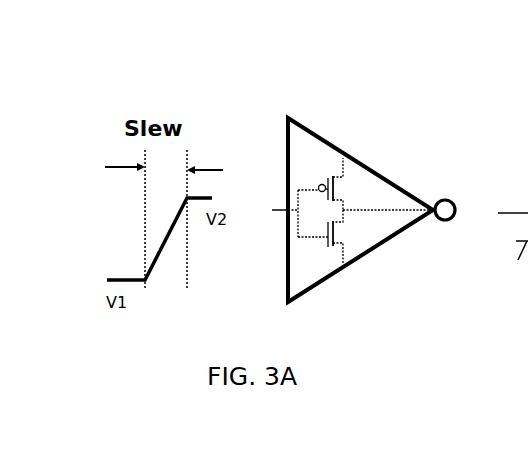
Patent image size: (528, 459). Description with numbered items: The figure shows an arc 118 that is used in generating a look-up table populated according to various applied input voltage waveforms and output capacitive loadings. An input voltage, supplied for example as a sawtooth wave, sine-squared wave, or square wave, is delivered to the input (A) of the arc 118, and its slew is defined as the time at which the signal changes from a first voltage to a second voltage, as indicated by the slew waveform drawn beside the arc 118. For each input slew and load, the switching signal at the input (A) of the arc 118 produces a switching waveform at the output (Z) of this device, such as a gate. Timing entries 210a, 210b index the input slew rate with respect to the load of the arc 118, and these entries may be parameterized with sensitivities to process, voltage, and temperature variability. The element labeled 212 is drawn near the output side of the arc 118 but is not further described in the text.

The arc 118 is at (362, 193).
The timing entry 210a is at (340, 165).
The timing entry 210b is at (337, 245).
The output node 212 is at (397, 215).